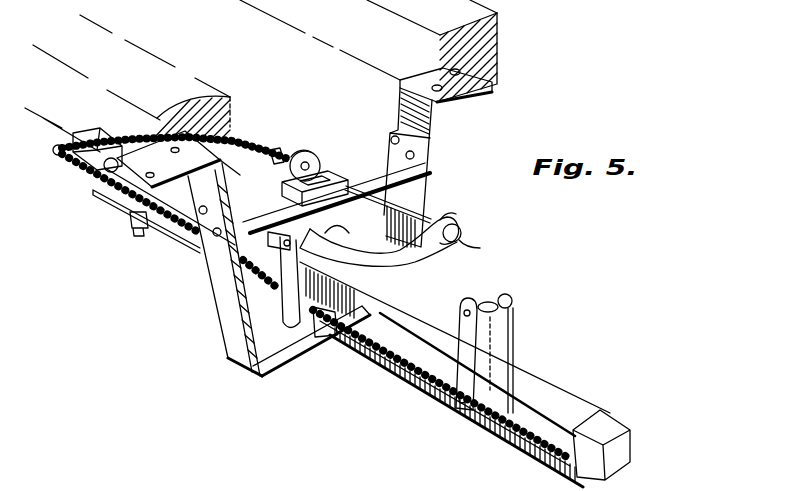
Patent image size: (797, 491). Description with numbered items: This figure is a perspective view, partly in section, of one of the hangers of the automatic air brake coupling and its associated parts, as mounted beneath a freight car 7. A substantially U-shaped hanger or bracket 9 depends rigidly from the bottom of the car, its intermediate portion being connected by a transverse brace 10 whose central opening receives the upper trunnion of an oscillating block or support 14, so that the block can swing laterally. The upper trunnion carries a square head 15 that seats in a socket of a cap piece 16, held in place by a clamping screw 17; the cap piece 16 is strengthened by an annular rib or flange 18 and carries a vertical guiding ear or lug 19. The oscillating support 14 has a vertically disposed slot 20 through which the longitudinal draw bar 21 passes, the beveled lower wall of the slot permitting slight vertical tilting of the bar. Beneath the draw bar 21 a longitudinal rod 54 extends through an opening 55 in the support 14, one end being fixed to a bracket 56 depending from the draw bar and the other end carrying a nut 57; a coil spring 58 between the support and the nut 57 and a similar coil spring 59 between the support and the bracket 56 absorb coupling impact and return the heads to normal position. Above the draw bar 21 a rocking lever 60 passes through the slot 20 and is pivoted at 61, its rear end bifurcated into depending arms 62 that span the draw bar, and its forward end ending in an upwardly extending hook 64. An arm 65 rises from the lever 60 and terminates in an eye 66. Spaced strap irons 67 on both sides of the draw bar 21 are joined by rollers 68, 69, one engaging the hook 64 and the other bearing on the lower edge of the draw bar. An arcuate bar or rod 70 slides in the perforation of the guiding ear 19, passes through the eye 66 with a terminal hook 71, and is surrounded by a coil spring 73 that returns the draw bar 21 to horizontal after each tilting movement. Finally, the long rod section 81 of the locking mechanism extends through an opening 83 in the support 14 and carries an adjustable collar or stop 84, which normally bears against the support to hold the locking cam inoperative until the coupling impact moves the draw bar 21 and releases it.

The freight car 7 is at (261, 76).
The hanger or bracket 9 is at (430, 157).
The transverse brace 10 is at (384, 162).
The oscillating block or support 14 is at (287, 292).
The square head 15 is at (232, 178).
The cap piece 16 is at (322, 168).
The clamping screw 17 is at (420, 178).
The annular rib or flange 18 is at (277, 150).
The guiding ear or lug 19 is at (309, 152).
The vertically disposed slot 20 is at (270, 350).
The draw bar 21 is at (523, 373).
The longitudinal rod 54 is at (520, 449).
The opening 55 is at (312, 313).
The bracket 56 is at (585, 440).
The nut 57 is at (53, 152).
The coil spring 58 is at (163, 230).
The coil spring 59 is at (417, 375).
The rocking lever 60 is at (427, 207).
The pivot 61 is at (270, 243).
The depending arms 62 is at (97, 177).
The upwardly extending hook 64 is at (510, 308).
The arm 65 is at (453, 217).
The eye 66 is at (462, 230).
The strap irons 67 is at (514, 330).
The roller 68 is at (498, 295).
The roller 69 is at (495, 397).
The arcuate bar or rod 70 is at (233, 137).
The terminal hook 71 is at (460, 240).
The coil spring 73 is at (200, 118).
The long rod section 81 is at (473, 428).
The opening 83 is at (322, 340).
The adjustable collar or stop 84 is at (130, 222).